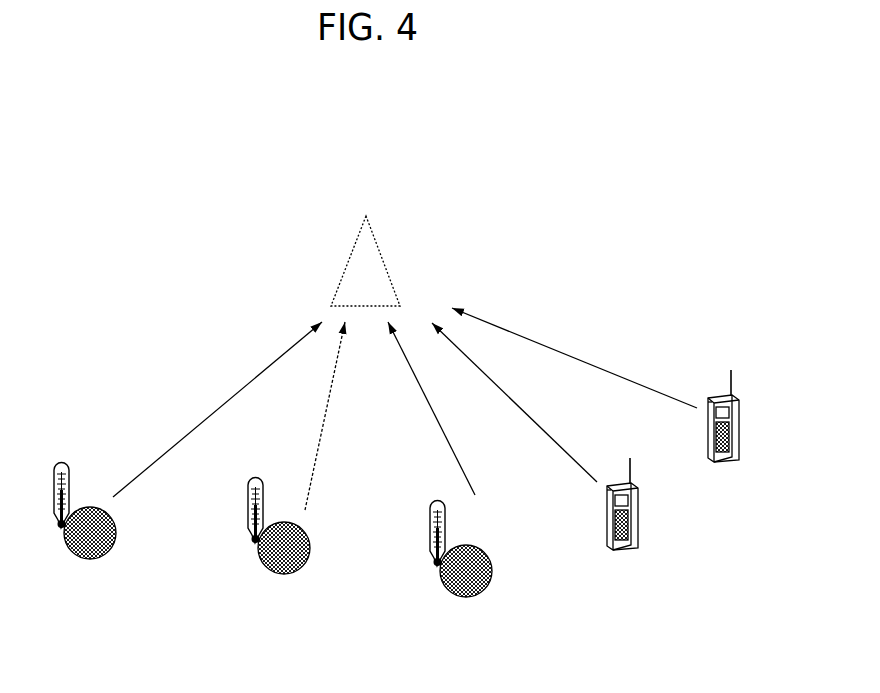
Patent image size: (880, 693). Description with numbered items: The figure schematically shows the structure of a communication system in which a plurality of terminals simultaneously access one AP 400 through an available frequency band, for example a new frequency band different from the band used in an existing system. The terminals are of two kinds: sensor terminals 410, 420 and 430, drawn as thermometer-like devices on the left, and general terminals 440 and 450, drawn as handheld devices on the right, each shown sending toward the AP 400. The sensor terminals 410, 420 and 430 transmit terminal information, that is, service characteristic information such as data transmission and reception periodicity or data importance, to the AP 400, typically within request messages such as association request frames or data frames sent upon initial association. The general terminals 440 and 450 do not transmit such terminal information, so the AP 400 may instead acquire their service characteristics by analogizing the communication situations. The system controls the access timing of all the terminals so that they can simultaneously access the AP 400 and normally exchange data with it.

The AP 400 is at (385, 262).
The sensor terminal 410 is at (63, 461).
The sensor terminal 420 is at (257, 476).
The sensor terminal 430 is at (436, 499).
The general terminal 440 is at (638, 508).
The general terminal 450 is at (741, 420).